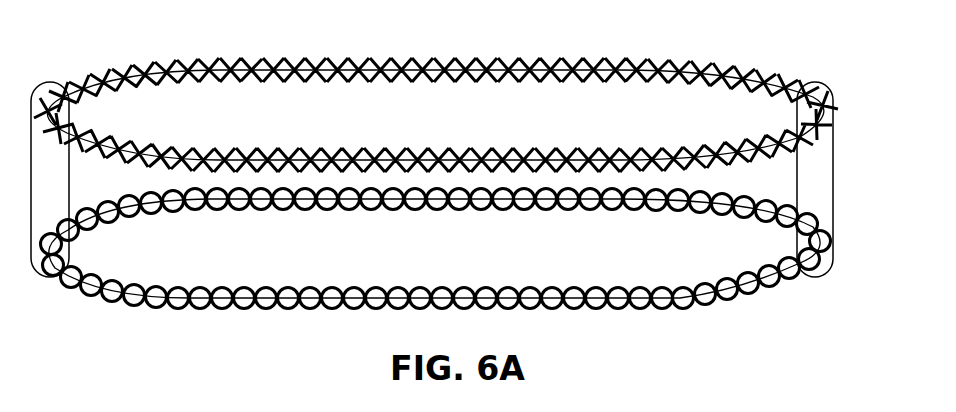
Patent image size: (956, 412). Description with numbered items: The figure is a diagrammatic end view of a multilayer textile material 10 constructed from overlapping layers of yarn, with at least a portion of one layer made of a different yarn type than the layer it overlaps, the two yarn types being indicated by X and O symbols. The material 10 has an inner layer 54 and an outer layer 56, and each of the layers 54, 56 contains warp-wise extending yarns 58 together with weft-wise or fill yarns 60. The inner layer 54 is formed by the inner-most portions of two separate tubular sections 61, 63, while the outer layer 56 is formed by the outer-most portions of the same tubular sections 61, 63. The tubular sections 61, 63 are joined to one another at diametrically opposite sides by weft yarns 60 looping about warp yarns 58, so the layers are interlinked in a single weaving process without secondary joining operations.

The textile material 10 is at (836, 156).
The inner layer 54 is at (290, 153).
The outer layer 56 is at (708, 65).
The warp-wise extending yarns 58 is at (110, 73).
The weft-wise or fill yarns 60 is at (157, 67).
The tubular section 61 is at (587, 62).
The tubular section 63 is at (733, 303).